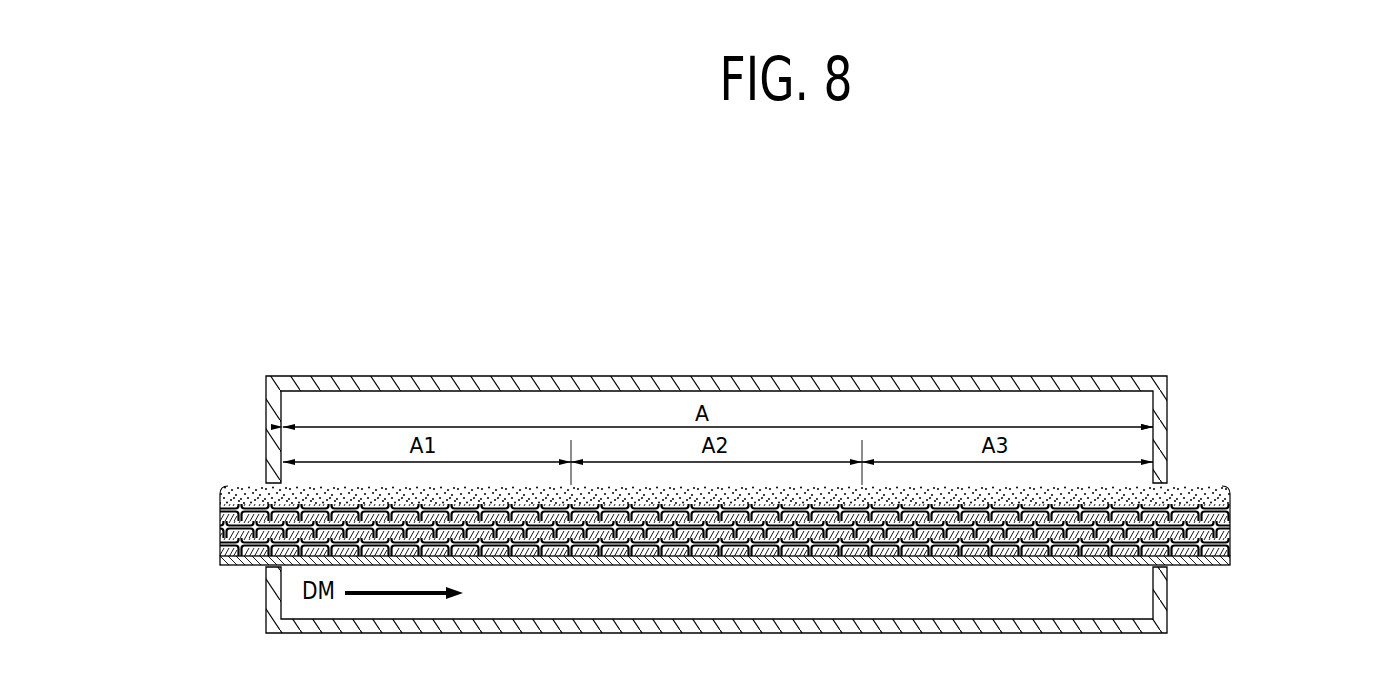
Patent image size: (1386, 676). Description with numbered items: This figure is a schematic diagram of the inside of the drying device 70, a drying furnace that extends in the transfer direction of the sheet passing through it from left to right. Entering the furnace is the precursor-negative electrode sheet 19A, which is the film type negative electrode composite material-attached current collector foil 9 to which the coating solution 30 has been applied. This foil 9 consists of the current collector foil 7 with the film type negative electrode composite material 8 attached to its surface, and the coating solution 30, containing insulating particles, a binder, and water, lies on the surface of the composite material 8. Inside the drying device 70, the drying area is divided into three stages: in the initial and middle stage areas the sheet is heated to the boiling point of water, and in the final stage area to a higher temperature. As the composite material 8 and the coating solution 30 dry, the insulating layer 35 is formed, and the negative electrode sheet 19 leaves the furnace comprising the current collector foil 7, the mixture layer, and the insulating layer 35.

The drying device 70 is at (887, 380).
The negative electrode sheet 19 is at (719, 528).
The precursor-negative electrode sheet 19A is at (694, 528).
The coating solution 30 is at (725, 489).
The insulating layer 35 is at (1213, 488).
The film type negative electrode composite material 8 is at (213, 498).
The film type negative electrode composite material-attached current collector foil 9 is at (724, 543).
The current collector foil 7 is at (728, 568).